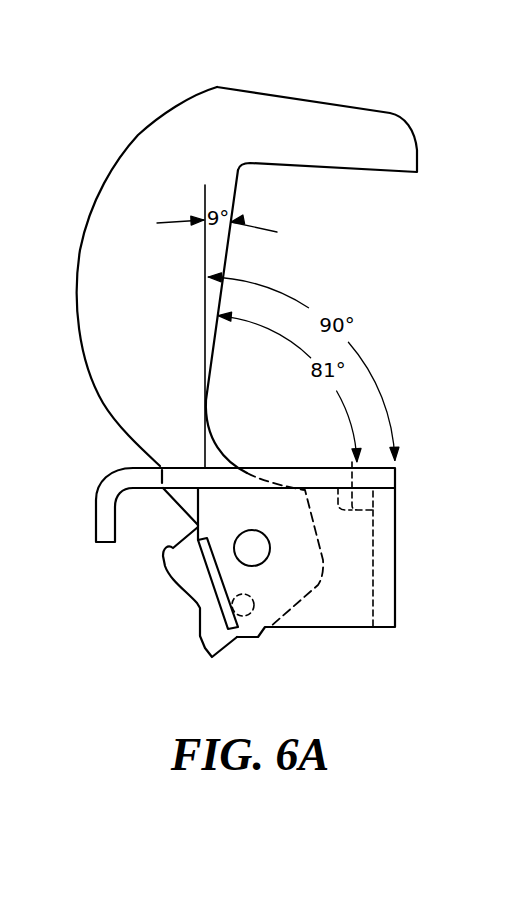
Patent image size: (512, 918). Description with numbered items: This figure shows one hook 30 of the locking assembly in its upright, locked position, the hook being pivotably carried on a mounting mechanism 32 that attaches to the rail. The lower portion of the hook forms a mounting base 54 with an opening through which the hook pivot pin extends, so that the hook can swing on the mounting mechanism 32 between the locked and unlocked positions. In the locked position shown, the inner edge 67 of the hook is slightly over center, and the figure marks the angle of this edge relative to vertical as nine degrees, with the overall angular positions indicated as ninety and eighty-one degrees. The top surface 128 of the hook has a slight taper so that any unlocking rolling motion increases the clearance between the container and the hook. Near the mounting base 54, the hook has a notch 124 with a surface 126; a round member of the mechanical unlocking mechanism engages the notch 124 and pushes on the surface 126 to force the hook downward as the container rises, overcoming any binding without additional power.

The hook 30 is at (160, 148).
The top surface 128 is at (335, 105).
The inner edge 67 is at (238, 188).
The mounting mechanism 32 is at (413, 572).
The notch 124 is at (192, 525).
The surface 126 is at (164, 551).
The mounting base 54 is at (209, 638).